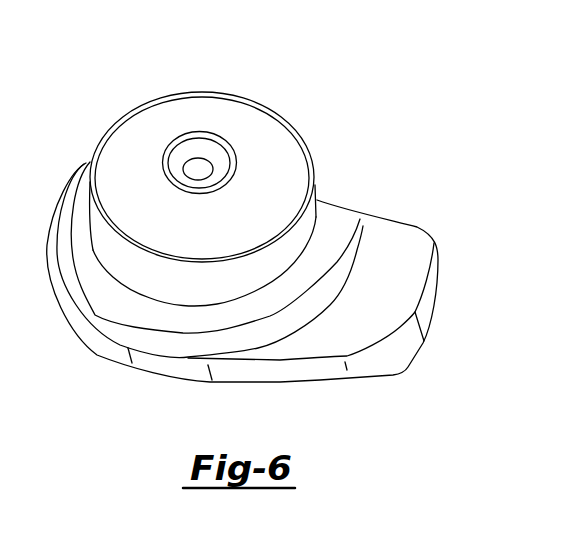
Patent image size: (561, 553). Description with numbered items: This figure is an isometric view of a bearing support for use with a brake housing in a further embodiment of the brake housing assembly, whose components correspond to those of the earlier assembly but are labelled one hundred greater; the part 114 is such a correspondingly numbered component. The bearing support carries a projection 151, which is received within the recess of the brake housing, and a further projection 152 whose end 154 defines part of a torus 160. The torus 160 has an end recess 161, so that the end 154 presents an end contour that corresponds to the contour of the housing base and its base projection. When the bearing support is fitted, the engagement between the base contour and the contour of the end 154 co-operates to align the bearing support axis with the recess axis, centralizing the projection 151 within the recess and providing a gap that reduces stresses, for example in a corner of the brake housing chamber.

The base housing 114 is at (272, 384).
The projection 151 is at (203, 293).
The projection 152 is at (150, 283).
The end 154 is at (158, 123).
The torus 160 is at (240, 123).
The end recess 161 is at (195, 167).